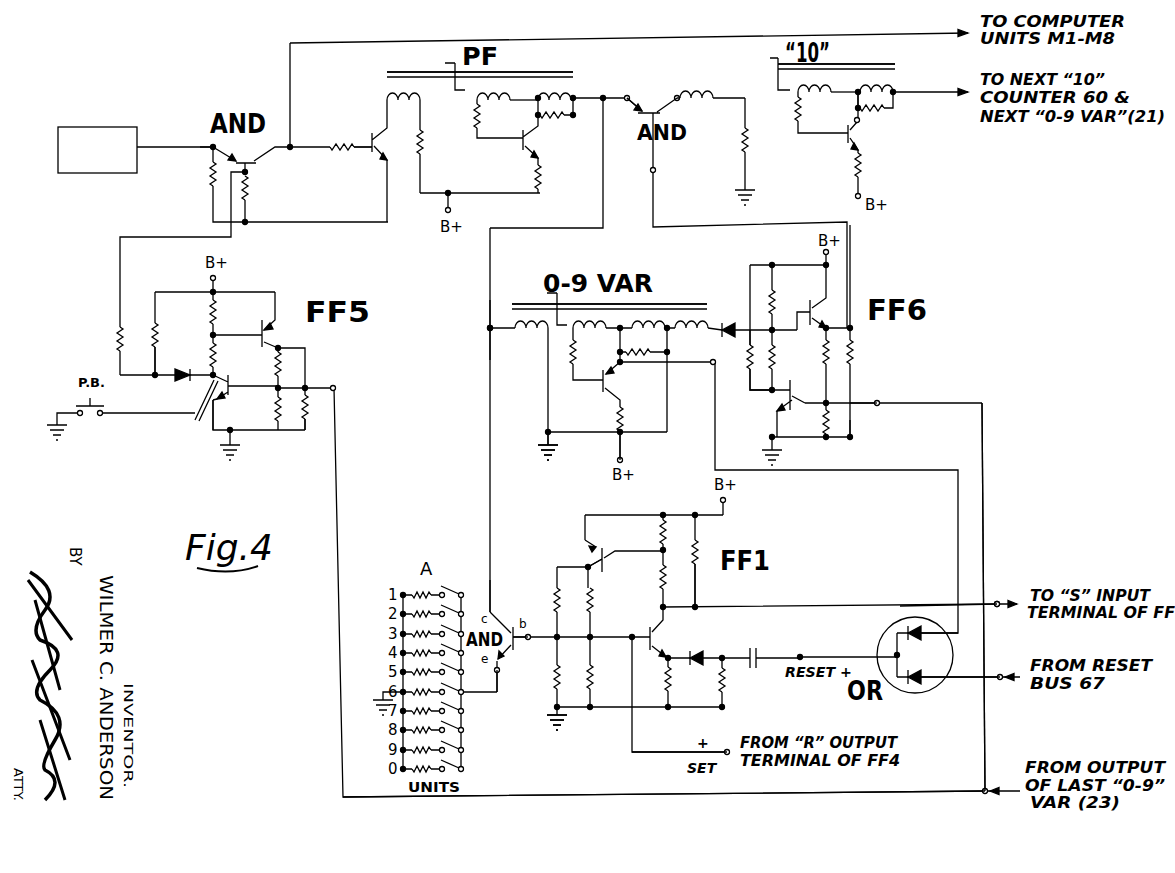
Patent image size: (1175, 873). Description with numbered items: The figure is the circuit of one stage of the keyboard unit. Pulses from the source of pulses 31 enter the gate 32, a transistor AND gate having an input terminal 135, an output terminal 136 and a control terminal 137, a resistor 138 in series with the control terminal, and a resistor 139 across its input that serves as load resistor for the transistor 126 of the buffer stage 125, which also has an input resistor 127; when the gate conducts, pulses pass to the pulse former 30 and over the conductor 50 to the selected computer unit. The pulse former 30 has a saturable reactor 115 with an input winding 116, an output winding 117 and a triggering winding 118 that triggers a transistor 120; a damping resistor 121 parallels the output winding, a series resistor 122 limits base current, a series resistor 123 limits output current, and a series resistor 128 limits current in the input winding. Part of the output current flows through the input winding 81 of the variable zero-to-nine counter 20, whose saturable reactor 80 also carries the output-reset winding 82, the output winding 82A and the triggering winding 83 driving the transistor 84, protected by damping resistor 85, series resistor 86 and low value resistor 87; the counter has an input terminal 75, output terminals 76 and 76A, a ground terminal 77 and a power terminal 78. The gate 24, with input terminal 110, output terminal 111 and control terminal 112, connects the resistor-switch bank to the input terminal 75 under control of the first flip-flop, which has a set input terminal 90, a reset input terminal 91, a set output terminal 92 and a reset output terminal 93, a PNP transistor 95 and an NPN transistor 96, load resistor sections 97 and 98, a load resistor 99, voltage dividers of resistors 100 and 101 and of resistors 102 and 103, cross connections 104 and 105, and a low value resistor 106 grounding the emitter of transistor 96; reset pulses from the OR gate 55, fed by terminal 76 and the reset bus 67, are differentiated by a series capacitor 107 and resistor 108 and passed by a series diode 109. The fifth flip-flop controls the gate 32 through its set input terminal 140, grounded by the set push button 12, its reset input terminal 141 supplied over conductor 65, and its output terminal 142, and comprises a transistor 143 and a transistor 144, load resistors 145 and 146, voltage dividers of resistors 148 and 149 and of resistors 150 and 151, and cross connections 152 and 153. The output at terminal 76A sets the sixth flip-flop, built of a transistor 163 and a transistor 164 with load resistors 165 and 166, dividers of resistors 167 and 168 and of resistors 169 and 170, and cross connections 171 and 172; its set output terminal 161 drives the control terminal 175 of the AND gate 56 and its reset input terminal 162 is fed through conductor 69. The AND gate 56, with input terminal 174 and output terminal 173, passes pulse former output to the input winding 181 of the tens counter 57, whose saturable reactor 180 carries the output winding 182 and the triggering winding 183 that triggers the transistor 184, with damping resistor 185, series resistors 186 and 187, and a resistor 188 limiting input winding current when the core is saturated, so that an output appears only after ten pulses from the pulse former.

The source of pulses 31 is at (90, 125).
The input terminal 135 is at (209, 145).
The switch or gate 32 is at (268, 133).
The resistor 139 is at (207, 182).
The control terminal 137 is at (249, 173).
The resistor 138 is at (249, 198).
The output terminal 136 is at (291, 150).
The input or buffer stage 125 is at (375, 124).
The transistor 126 is at (381, 158).
The input resistor 127 is at (346, 162).
The conductor 50 is at (712, 38).
The pulse former 30 is at (512, 67).
The saturable reactor 115 is at (562, 73).
The input winding 116 is at (419, 102).
The output winding 117 is at (576, 93).
The triggering winding 118 is at (491, 102).
The series resistor 122 is at (477, 122).
The damping resistor 121 is at (548, 120).
The series resistor 128 is at (424, 150).
The transistor 120 is at (521, 149).
The series resistor 123 is at (548, 178).
The input terminal 174 is at (646, 94).
The AND gate 56 is at (652, 102).
The output terminal 173 is at (708, 103).
The input winding 181 is at (742, 140).
The resistor 188 is at (740, 165).
The control terminal 175 is at (656, 174).
The "10" counter 57 is at (838, 63).
The saturable reactor 180 is at (882, 68).
The series resistor 186 is at (800, 126).
The triggering winding 183 is at (804, 113).
The output winding 182 is at (893, 107).
The damping resistor 185 is at (872, 112).
The transistor 184 is at (860, 136).
The series resistor 187 is at (866, 168).
The set push button 12 is at (77, 407).
The output terminal 142 is at (163, 385).
The set input terminal 140 is at (198, 421).
The transistor 143 is at (232, 401).
The load resistor 145 is at (160, 330).
The resistor 148 is at (205, 352).
The resistor 149 is at (218, 314).
The cross connection 152 is at (218, 345).
The cross connection 153 is at (270, 390).
The transistor 144 is at (270, 333).
The resistor 150 is at (290, 362).
The resistor 151 is at (303, 395).
The reset input terminal 141 is at (336, 388).
The load resistor 146 is at (310, 420).
The variable "0–9" counter 20 is at (657, 299).
The saturable reactor 80 is at (512, 306).
The input terminal 75 is at (488, 331).
The input winding 81 is at (519, 334).
The ground terminal 77 is at (548, 430).
The triggering winding 83 is at (590, 334).
The series resistor 86 is at (573, 366).
The output-reset winding 82 is at (632, 331).
The output winding 82A is at (680, 331).
The damping resistor 85 is at (622, 372).
The transistor 84 is at (612, 386).
The low value resistor 87 is at (626, 412).
The power terminal 78 is at (625, 460).
The output terminal 76 is at (713, 366).
The output terminal 76A is at (720, 326).
The cross connection 171 is at (750, 340).
The load resistor 165 is at (752, 375).
The transistor 163 is at (786, 402).
The resistor 167 is at (800, 305).
The resistor 168 is at (776, 370).
The transistor 164 is at (830, 303).
The resistor 169 is at (824, 348).
The cross connection 172 is at (824, 422).
The load resistor 166 is at (852, 355).
The set output terminal 161 is at (852, 330).
The reset input terminal 162 is at (878, 406).
The resistor 170 is at (852, 432).
The conductor 69 is at (984, 418).
The switch or gate 24 is at (499, 625).
The input terminal 110 is at (491, 598).
The control terminal 112 is at (548, 650).
The output terminal 111 is at (499, 680).
The load resistor section 97 is at (557, 586).
The set output terminal 92 is at (560, 637).
The load resistor section 98 is at (555, 708).
The resistor 100 is at (594, 598).
The resistor 101 is at (590, 690).
The transistor 95 is at (603, 568).
The cross connection 104 is at (597, 637).
The resistor 102 is at (657, 520).
The cross connection 105 is at (658, 556).
The load resistor 99 is at (700, 543).
The resistor 103 is at (697, 587).
The transistor 96 is at (668, 637).
The series diode 109 is at (698, 650).
The low value resistor 106 is at (664, 680).
The resistor 108 is at (727, 706).
The series capacitor 107 is at (755, 648).
The reset input terminal 91 is at (801, 655).
The set input terminal 90 is at (727, 750).
The OR gate 55 is at (940, 690).
The reset output terminal 93 is at (997, 607).
The reset bus 67 is at (1000, 680).
The conductor 65 is at (608, 795).